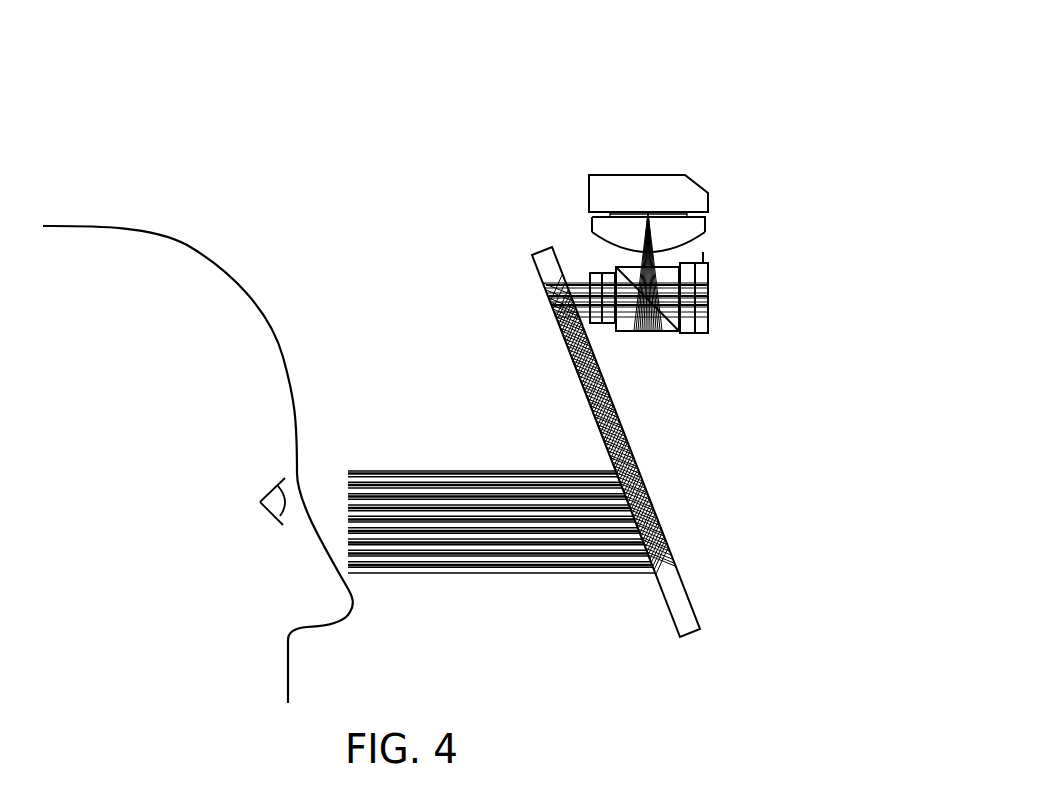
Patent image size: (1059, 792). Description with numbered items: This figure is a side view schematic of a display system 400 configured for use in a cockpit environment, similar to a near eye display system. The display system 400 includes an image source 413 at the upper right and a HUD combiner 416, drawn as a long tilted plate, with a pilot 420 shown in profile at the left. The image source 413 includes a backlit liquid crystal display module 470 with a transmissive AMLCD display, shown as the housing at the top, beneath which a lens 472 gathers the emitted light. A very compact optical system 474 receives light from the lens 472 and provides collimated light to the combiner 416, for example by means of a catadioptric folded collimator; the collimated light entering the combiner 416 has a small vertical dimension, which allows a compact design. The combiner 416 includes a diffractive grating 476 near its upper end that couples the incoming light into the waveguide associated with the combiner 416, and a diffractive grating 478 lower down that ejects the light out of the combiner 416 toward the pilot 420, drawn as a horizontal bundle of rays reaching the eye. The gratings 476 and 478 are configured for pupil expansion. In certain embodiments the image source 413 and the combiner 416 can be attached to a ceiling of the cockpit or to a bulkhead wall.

The display system 400 is at (522, 148).
The image source 413 is at (727, 148).
The HUD combiner 416 is at (622, 442).
The pilot 420 is at (190, 255).
The backlit liquid crystal display module 470 is at (589, 194).
The lens 472 is at (693, 238).
The compact optical system 474 is at (698, 322).
The diffractive grating 476 is at (548, 303).
The diffractive grating 478 is at (660, 528).